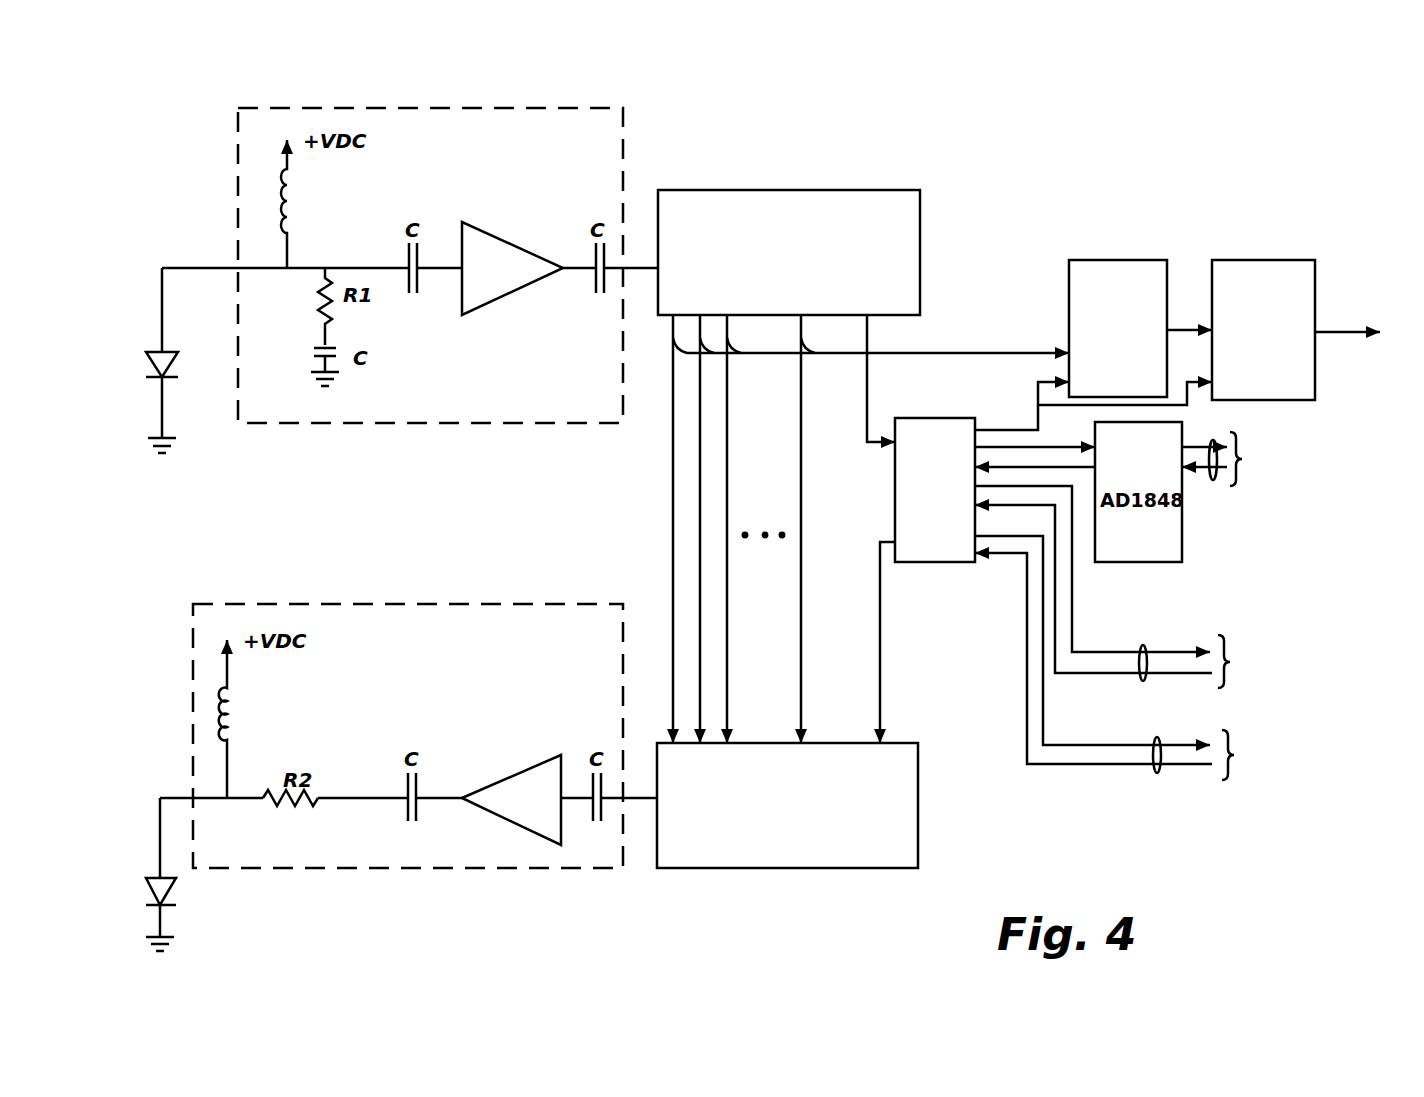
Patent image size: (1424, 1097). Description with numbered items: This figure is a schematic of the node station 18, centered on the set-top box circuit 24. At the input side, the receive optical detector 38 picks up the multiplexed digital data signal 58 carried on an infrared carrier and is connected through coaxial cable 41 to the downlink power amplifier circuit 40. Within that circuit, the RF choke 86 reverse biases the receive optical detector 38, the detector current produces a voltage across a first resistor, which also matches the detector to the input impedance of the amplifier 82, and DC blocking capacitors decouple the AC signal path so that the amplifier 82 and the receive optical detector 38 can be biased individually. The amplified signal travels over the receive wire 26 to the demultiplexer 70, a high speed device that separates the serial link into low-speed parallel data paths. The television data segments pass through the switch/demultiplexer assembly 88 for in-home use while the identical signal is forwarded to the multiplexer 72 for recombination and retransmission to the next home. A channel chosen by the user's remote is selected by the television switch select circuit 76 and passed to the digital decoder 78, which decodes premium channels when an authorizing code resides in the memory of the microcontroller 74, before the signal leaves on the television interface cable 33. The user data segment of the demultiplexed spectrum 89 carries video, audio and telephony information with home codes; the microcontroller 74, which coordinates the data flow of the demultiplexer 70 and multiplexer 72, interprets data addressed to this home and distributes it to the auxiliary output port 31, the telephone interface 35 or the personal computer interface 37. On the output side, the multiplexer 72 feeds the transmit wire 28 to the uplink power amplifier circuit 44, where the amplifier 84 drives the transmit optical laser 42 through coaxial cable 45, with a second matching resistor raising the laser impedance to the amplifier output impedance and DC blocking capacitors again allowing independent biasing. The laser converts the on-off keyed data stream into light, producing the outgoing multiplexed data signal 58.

The node station 18 is at (830, 172).
The set-top box circuit 24 is at (1003, 823).
The receive wire 26 is at (637, 268).
The transmit wire 28 is at (645, 800).
The output port 31 is at (1148, 645).
The interface cable 33 is at (1347, 330).
The interface cable 35 is at (1213, 478).
The interface cable 37 is at (1160, 772).
The receive optical detector 38 is at (166, 356).
The downlink power amplifier circuit 40 is at (550, 108).
The coaxial cable 41 is at (195, 268).
The transmit optical laser 42 is at (178, 887).
The uplink power amplifier circuit 44 is at (478, 604).
The coaxial cable 45 is at (175, 797).
The multiplexed digital data signal 58 is at (137, 372).
The demultiplexer 70 is at (911, 240).
The multiplexer 72 is at (870, 868).
The microcontroller 74 is at (913, 505).
The television switch select circuit 76 is at (1113, 262).
The digital decoder 78 is at (1258, 263).
The amplifier 82 is at (497, 296).
The amplifier 84 is at (547, 762).
The RF choke 86 is at (290, 203).
The switch/demultiplexer assembly 88 is at (965, 353).
The demultiplexed spectrum 89 is at (882, 656).